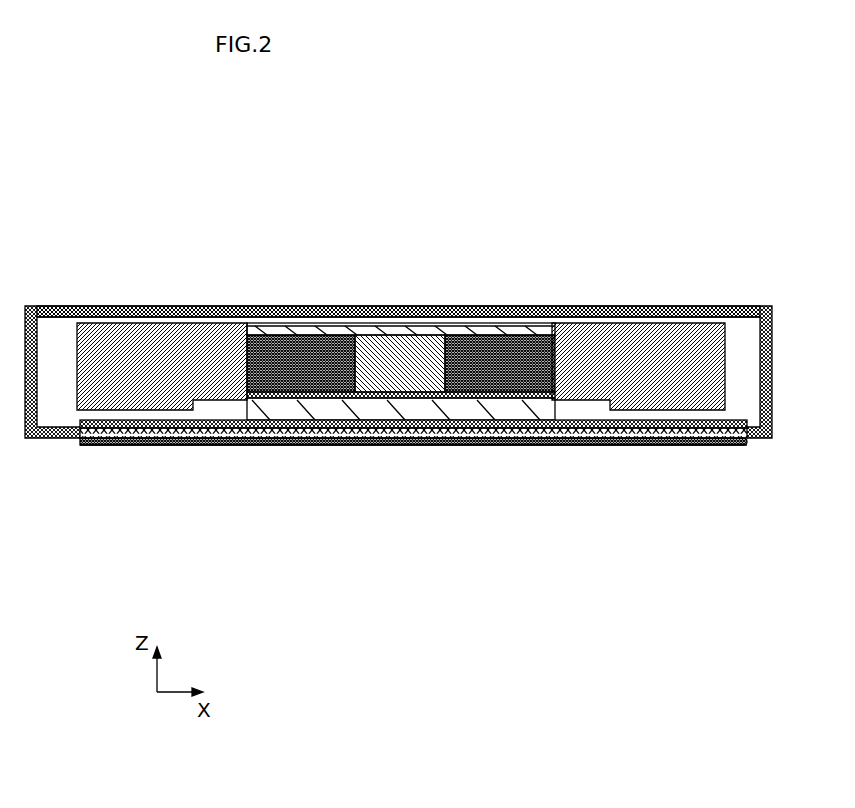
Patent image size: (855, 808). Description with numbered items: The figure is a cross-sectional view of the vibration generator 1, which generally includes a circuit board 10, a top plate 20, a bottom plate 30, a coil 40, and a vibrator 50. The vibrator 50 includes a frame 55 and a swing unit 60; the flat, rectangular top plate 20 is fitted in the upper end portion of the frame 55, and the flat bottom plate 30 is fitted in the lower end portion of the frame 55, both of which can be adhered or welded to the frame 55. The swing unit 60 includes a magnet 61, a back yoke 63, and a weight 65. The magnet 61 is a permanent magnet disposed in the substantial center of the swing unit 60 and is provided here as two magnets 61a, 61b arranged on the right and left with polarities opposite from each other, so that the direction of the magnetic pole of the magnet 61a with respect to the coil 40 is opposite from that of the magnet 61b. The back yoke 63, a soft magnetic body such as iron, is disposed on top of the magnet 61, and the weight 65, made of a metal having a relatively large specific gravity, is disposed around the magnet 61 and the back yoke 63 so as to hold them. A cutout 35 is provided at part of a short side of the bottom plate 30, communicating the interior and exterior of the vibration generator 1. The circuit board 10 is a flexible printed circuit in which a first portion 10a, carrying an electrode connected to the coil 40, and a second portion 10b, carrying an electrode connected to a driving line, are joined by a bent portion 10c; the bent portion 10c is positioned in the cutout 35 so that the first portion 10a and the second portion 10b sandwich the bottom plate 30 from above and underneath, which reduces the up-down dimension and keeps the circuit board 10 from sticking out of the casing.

The vibration generator 1 is at (148, 46).
The circuit board 10 is at (419, 531).
The first portion 10a is at (690, 447).
The second portion 10b is at (630, 447).
The bent portion 10c is at (745, 447).
The top plate 20 is at (64, 307).
The bottom plate 30 is at (55, 440).
The cutout 35 is at (760, 447).
The coil 40 is at (316, 446).
The vibrator 50 is at (398, 260).
The frame 55 is at (768, 310).
The swing unit 60 is at (593, 312).
The magnet 61 is at (401, 286).
The magnet 61a is at (458, 337).
The magnet 61b is at (350, 337).
The back yoke 63 is at (504, 340).
The weight 65 is at (678, 340).